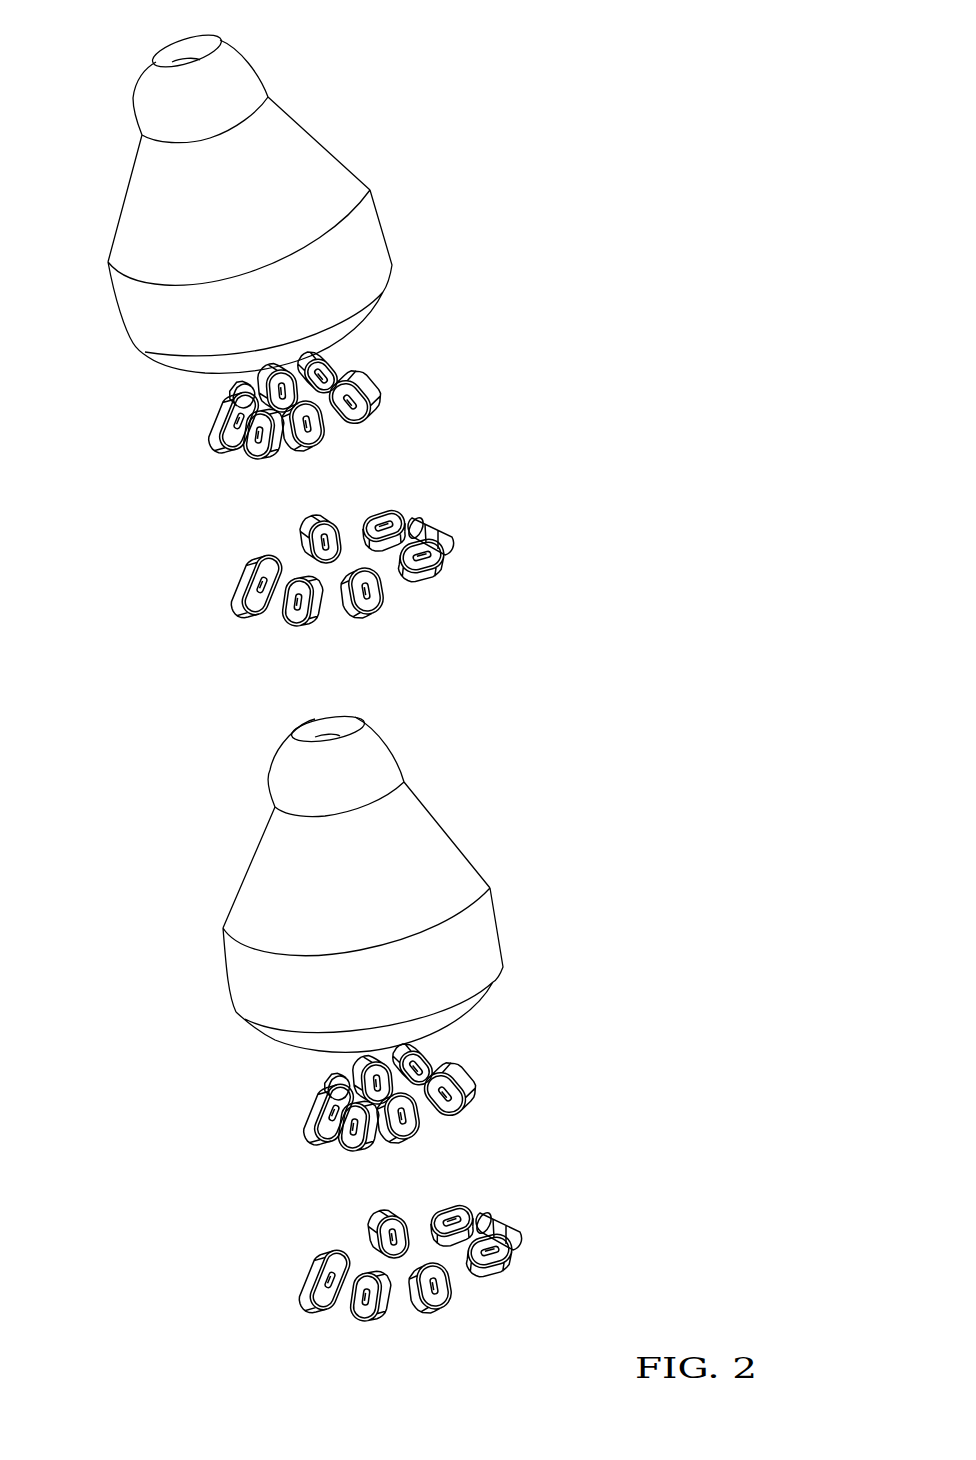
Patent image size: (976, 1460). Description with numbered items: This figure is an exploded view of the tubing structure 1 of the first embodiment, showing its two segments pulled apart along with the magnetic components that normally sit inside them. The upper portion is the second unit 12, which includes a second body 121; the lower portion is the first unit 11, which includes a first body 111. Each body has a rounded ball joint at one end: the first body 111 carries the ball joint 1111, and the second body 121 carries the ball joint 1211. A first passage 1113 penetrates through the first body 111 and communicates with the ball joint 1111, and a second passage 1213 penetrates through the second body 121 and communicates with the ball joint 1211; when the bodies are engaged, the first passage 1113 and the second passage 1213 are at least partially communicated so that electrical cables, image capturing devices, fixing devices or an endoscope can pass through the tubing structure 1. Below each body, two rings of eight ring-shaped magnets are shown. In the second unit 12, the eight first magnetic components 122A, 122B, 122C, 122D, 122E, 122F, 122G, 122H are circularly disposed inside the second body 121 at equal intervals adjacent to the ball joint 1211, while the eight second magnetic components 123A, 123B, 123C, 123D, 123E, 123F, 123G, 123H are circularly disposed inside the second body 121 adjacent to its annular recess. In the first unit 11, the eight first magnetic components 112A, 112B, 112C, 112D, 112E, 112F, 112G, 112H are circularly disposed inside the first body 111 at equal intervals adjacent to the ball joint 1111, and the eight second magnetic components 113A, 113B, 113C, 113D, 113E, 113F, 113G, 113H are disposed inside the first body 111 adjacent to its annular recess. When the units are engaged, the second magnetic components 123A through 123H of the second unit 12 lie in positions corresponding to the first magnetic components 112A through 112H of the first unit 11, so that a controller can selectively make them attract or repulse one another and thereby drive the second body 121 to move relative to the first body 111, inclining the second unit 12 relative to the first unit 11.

The tubing structure 1 is at (657, 120).
The first unit 11 is at (427, 1040).
The second unit 12 is at (308, 343).
The first body 111 is at (319, 879).
The ball joint 1111 is at (336, 761).
The first passage 1113 is at (316, 716).
The second body 121 is at (210, 188).
The ball joint 1211 is at (217, 73).
The second passage 1213 is at (175, 39).
The first magnetic component 112A is at (457, 1076).
The first magnetic component 112B is at (400, 1062).
The first magnetic component 112C is at (335, 1076).
The first magnetic component 112D is at (322, 1100).
The first magnetic component 112E is at (335, 1142).
The first magnetic component 112F is at (347, 1145).
The first magnetic component 112G is at (418, 1138).
The first magnetic component 112H is at (470, 1104).
The second magnetic component 113A is at (522, 1243).
The second magnetic component 113B is at (470, 1220).
The second magnetic component 113C is at (378, 1230).
The second magnetic component 113D is at (325, 1265).
The second magnetic component 113E is at (320, 1318).
The second magnetic component 113F is at (362, 1320).
The second magnetic component 113G is at (442, 1318).
The second magnetic component 113H is at (503, 1285).
The first magnetic component 122A is at (362, 384).
The first magnetic component 122B is at (285, 375).
The first magnetic component 122C is at (240, 393).
The first magnetic component 122D is at (225, 415).
The first magnetic component 122E is at (218, 446).
The first magnetic component 122F is at (262, 450).
The first magnetic component 122G is at (318, 440).
The first magnetic component 122H is at (375, 412).
The second magnetic component 123A is at (450, 534).
The second magnetic component 123B is at (385, 518).
The second magnetic component 123C is at (308, 533).
The second magnetic component 123D is at (250, 572).
The second magnetic component 123E is at (242, 618).
The second magnetic component 123F is at (292, 624).
The second magnetic component 123G is at (384, 613).
The second magnetic component 123H is at (437, 572).